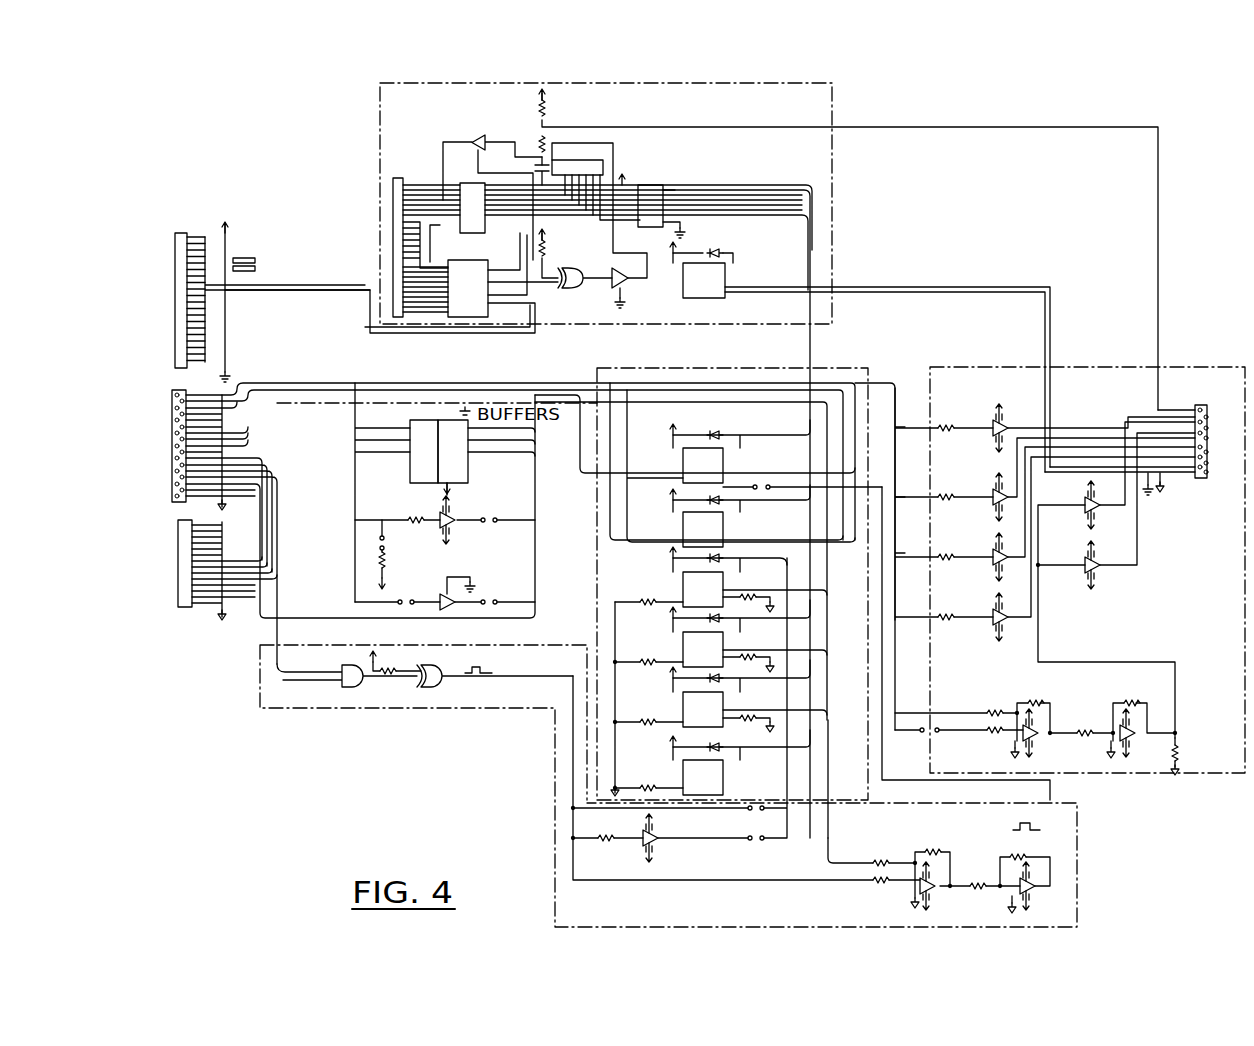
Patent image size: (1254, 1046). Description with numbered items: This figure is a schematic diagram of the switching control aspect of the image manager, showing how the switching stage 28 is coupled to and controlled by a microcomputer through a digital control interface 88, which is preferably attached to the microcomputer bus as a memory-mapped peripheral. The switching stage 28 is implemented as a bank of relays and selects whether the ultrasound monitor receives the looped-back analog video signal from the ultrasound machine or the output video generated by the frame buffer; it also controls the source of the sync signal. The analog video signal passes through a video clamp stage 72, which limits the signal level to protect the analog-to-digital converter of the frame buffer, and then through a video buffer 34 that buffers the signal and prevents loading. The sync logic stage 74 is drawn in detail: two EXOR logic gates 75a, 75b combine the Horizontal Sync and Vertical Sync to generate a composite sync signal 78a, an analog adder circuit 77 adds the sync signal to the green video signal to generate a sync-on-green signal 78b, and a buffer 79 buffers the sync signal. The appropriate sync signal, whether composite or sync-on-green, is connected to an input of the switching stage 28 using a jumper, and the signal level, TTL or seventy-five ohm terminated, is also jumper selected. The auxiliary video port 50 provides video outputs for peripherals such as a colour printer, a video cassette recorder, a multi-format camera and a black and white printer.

The digital control interface 88 is at (833, 117).
The switching stage 28 is at (858, 366).
The auxiliary video port 50 is at (1118, 366).
The video clamp stage 72 is at (410, 468).
The video buffer 34 is at (468, 464).
The sync logic stage 74 is at (260, 680).
The EXOR logic gate 75a is at (358, 688).
The EXOR logic gate 75b is at (431, 687).
The composite sync signal 78a is at (485, 667).
The sync-on-green signal 78b is at (1031, 823).
The analog adder circuit 77 is at (974, 860).
The buffer 79 is at (657, 842).